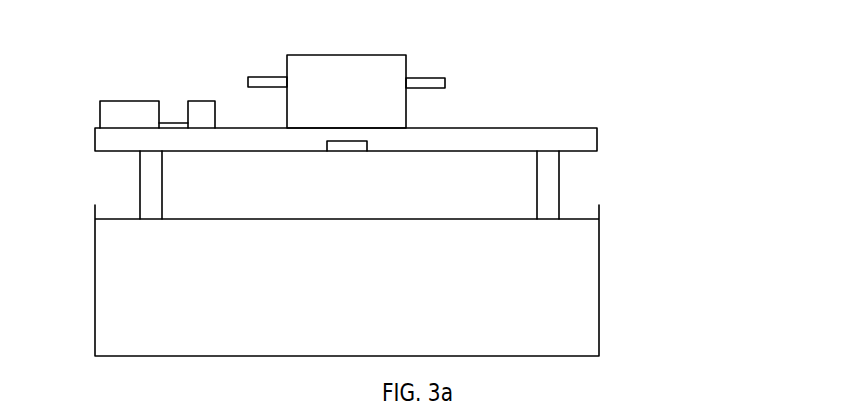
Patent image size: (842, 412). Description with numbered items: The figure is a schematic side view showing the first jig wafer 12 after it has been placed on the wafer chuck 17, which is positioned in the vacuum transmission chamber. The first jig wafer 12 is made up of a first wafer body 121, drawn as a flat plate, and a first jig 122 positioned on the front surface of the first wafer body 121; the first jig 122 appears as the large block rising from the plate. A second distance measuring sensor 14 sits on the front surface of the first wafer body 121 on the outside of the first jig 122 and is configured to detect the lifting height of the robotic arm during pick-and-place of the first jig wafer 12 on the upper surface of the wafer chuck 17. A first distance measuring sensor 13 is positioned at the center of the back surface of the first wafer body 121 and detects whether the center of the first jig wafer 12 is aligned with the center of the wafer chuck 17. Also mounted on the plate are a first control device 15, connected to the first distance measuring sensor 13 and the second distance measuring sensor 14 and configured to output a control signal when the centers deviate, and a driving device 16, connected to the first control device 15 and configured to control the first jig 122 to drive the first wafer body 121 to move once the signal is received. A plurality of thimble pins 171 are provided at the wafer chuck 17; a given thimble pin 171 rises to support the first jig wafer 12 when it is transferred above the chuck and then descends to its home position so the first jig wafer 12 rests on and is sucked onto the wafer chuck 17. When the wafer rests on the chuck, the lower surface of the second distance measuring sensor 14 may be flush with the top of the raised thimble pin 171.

The first jig wafer 12 is at (417, 91).
The first wafer body 121 is at (597, 138).
The first jig 122 is at (407, 71).
The first distance measuring sensor 13 is at (367, 142).
The second distance measuring sensor 14 is at (248, 81).
The first control device 15 is at (131, 101).
The driving device 16 is at (197, 101).
The wafer chuck 17 is at (599, 288).
The thimble pin 171 is at (559, 201).